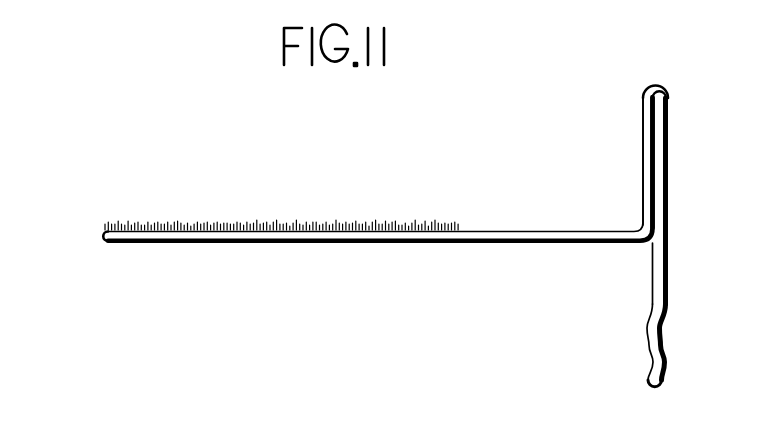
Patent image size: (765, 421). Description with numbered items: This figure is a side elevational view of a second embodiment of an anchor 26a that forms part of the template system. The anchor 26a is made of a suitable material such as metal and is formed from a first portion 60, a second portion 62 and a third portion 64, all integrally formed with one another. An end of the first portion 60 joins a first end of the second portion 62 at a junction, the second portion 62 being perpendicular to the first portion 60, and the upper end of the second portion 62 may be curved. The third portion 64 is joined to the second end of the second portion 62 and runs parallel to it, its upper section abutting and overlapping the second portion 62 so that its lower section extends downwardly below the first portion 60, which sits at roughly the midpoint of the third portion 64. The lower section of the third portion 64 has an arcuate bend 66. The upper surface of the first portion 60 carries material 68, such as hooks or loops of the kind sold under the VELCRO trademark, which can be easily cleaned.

The anchor 26a is at (159, 188).
The first portion 60 is at (482, 243).
The second portion 62 is at (641, 140).
The third portion 64 is at (666, 280).
The arcuate bend 66 is at (647, 347).
The material 68 is at (320, 222).